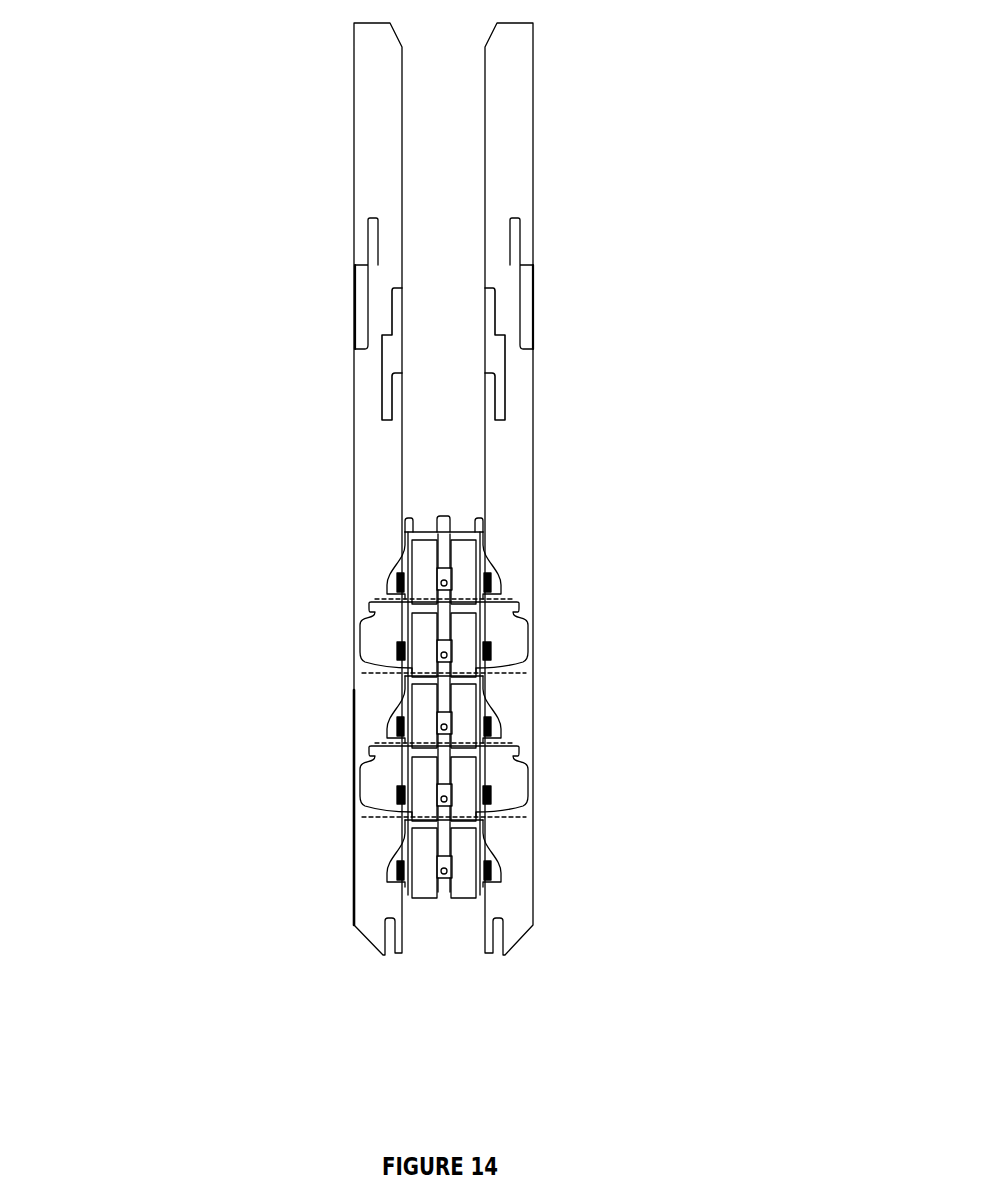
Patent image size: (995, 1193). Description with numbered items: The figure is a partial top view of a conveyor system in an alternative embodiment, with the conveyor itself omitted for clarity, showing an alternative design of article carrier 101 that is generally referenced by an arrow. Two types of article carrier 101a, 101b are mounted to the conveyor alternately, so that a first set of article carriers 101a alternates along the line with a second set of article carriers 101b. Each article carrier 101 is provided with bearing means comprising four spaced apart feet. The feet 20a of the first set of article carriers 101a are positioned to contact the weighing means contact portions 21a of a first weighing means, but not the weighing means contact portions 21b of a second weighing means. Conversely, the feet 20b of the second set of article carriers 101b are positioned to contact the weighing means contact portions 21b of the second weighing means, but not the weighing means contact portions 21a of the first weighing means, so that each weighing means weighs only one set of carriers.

The article carrier 101 is at (160, 579).
The first set of article carriers 101a is at (710, 602).
The second set of article carriers 101b is at (680, 670).
The feet 20a is at (405, 526).
The feet 20b is at (372, 607).
The weighing means contact portions 21a is at (387, 385).
The weighing means contact portions 21b is at (363, 283).